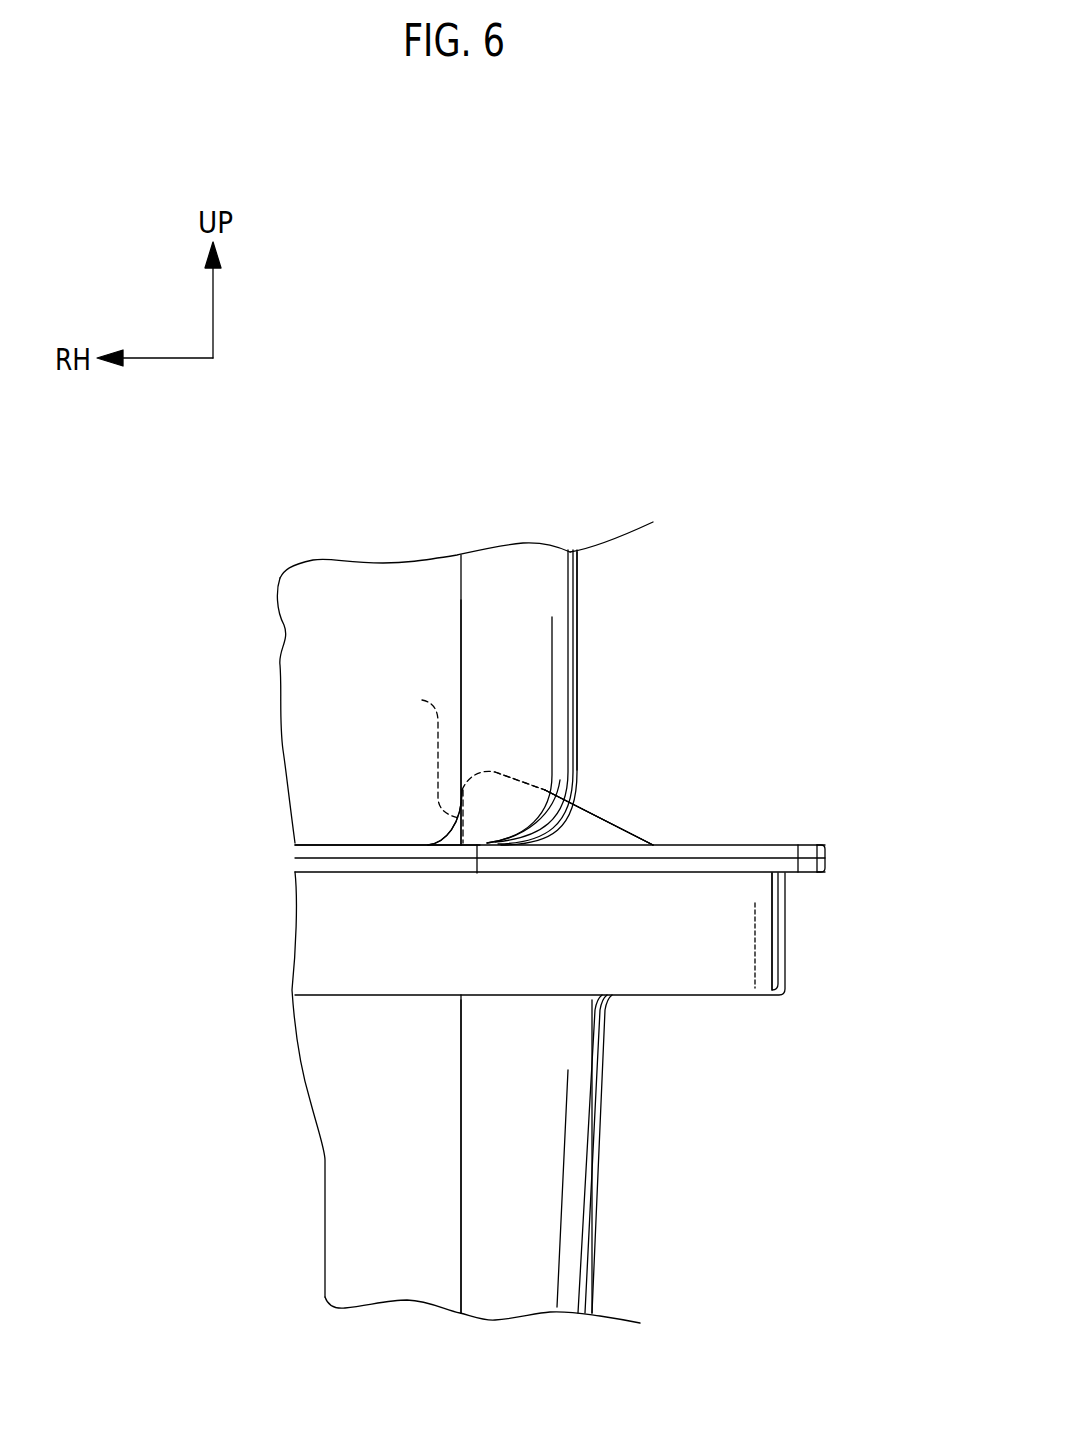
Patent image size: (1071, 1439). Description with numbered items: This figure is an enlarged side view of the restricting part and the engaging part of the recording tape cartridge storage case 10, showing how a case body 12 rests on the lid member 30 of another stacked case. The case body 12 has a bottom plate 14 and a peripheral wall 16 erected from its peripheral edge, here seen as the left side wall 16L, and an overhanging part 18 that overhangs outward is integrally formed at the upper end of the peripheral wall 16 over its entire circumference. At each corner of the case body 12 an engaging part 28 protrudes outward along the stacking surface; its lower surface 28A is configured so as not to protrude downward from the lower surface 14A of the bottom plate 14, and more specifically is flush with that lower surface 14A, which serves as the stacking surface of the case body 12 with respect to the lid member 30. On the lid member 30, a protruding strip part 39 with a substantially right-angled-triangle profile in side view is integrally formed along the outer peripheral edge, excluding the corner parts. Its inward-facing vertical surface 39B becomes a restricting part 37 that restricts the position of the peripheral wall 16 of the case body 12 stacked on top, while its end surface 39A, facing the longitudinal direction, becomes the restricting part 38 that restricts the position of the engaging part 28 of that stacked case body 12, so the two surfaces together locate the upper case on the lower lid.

The storage case 10 is at (751, 477).
The case body 12 is at (590, 606).
The bottom plate 14 is at (386, 852).
The lower surface of the bottom plate 14A is at (356, 846).
The peripheral wall 16 is at (465, 608).
The left side wall 16L is at (461, 695).
The overhanging part 18 is at (786, 927).
The engaging part 28 is at (578, 631).
The lower surface of the engaging part 28A is at (477, 873).
The lid member 30 is at (812, 836).
The restricting part 37 is at (445, 817).
The restricting part 38 is at (599, 817).
The protruding strip part 39 is at (602, 812).
The end surface 39A is at (577, 835).
The vertical surface 39B is at (394, 763).